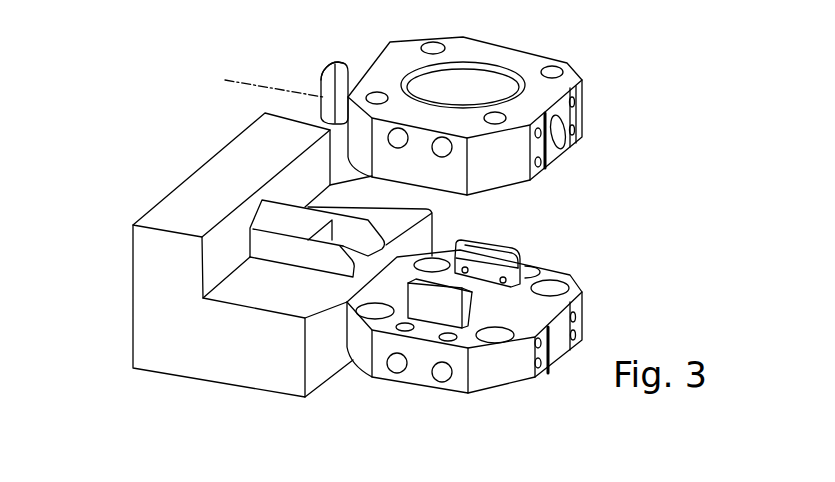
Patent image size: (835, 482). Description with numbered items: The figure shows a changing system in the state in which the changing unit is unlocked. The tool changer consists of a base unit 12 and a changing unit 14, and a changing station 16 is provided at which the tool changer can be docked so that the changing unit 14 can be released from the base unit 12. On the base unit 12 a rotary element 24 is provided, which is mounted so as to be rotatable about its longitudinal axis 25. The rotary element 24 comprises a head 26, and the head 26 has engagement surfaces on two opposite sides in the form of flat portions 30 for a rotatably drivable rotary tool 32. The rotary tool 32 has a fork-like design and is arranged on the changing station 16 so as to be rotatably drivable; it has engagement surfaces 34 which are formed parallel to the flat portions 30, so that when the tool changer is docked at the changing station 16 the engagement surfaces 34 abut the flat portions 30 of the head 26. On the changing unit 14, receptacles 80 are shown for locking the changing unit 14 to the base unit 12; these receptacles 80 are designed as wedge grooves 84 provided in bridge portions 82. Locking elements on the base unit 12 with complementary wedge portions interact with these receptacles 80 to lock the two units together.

The base unit 12 is at (575, 100).
The changing unit 14 is at (583, 318).
The changing station 16 is at (148, 380).
The rotary element 24 is at (345, 61).
The head 26 is at (332, 66).
The longitudinal axis 25 is at (247, 83).
The flat portions 30 is at (326, 62).
The rotary tool 32 is at (349, 185).
The engagement surfaces 34 is at (360, 233).
The receptacles 80 is at (553, 263).
The bridge portions 82 is at (449, 308).
The wedge grooves 84 is at (521, 267).